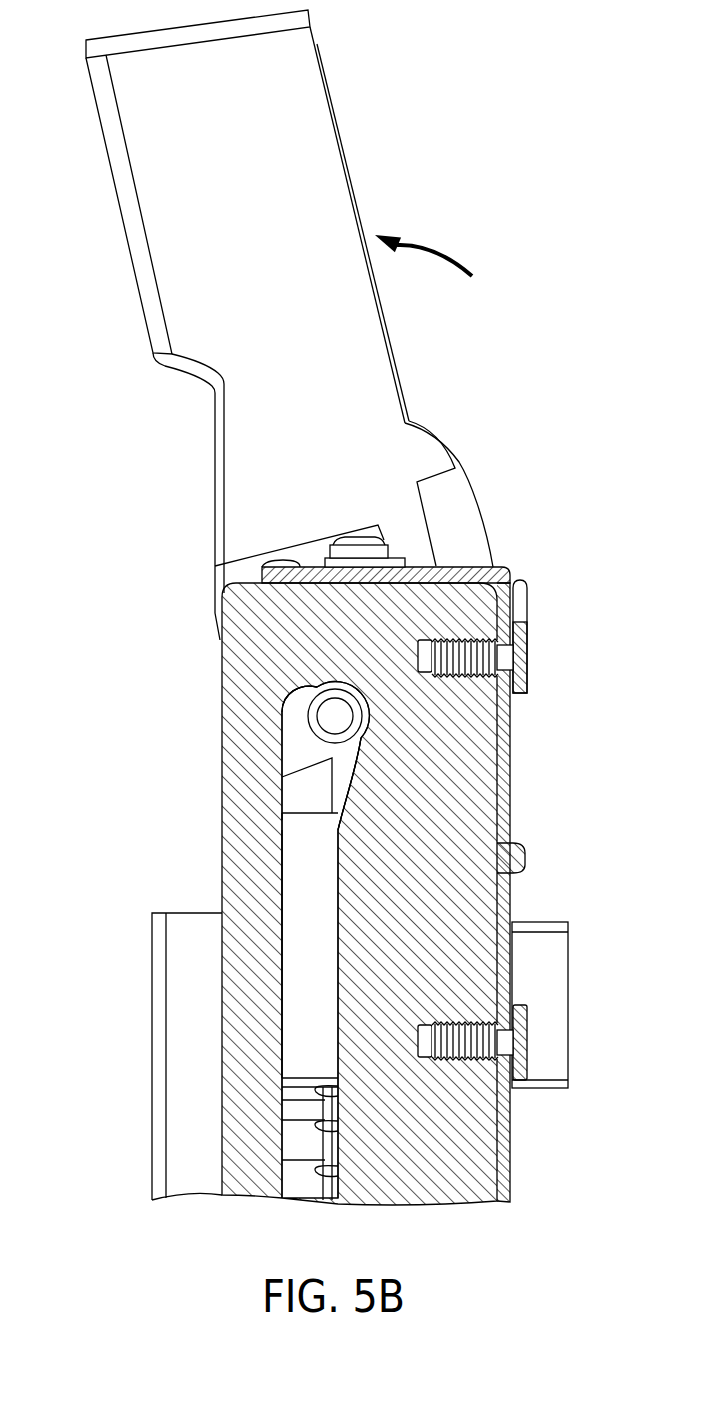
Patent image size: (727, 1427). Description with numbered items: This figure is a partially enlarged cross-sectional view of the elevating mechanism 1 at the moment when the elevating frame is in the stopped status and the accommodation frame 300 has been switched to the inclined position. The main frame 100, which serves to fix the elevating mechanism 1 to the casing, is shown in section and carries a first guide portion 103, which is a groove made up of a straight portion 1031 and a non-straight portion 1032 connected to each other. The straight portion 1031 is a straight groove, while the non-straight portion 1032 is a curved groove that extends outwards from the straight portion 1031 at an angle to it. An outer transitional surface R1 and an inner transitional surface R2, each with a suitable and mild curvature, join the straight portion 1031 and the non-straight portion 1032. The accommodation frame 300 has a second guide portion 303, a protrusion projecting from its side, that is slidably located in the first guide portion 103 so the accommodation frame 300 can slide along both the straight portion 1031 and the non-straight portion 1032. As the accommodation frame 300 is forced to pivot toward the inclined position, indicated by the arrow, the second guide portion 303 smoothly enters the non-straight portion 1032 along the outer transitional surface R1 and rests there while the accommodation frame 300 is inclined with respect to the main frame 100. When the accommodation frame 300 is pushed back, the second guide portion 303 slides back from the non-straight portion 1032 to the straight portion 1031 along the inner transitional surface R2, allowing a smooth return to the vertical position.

The elevating mechanism 1 is at (142, 492).
The accommodation frame 300 is at (332, 153).
The main frame 100 is at (334, 871).
The second guide portion 303 is at (337, 715).
The non-straight portion 1032 is at (292, 760).
The first guide portion 103 is at (303, 883).
The straight portion 1031 is at (309, 1011).
The outer transitional surface R1 is at (268, 709).
The inner transitional surface R2 is at (350, 778).